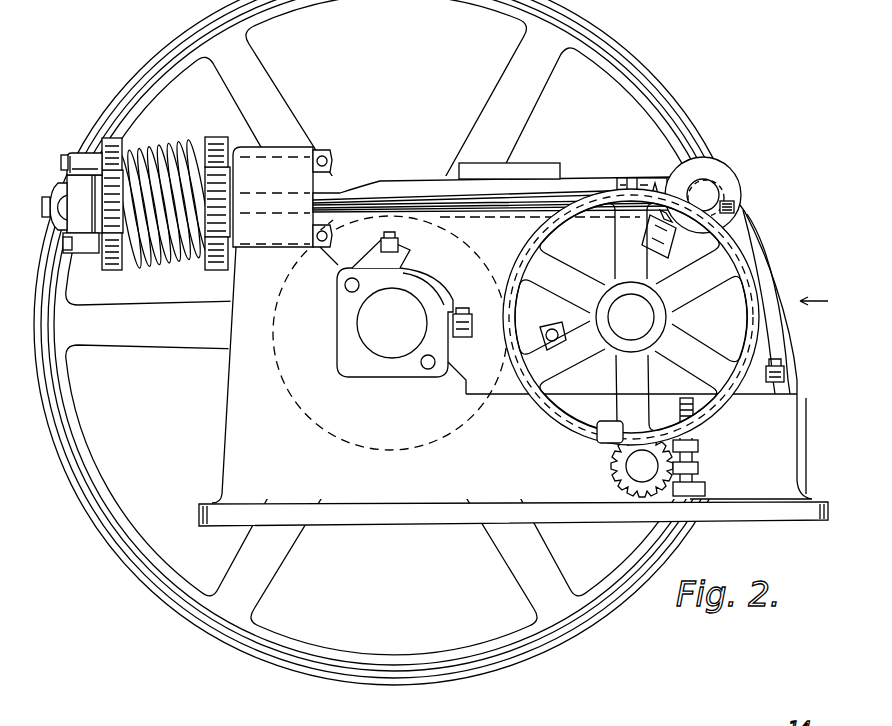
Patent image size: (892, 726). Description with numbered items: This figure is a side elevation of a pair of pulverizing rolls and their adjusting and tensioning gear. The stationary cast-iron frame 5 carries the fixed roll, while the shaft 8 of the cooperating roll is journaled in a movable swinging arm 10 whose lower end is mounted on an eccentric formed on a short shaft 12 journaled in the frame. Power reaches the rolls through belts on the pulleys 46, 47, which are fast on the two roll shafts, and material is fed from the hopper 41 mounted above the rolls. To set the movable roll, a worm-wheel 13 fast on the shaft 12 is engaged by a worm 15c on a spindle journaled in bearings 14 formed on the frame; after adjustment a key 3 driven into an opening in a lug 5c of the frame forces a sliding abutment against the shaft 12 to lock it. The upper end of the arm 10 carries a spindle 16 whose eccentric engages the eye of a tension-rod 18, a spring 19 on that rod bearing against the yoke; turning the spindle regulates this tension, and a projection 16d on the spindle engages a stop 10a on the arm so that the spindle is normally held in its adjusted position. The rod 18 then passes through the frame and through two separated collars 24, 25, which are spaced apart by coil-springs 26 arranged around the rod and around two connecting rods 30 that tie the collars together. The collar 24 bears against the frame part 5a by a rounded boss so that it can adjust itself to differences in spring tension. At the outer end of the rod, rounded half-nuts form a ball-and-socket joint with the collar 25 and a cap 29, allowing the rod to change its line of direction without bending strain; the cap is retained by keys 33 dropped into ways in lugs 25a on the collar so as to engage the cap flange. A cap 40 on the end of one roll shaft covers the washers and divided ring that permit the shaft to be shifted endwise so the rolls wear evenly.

The pulley 47 is at (447, 0).
The frame 5 is at (513, 351).
The frame part 5a is at (340, 190).
The lug 5c is at (606, 453).
The rods 30 is at (287, 156).
The coil-springs 26 is at (172, 150).
The collar 25 is at (113, 266).
The lugs 25a is at (82, 218).
The collar 24 is at (213, 265).
The keys 33 is at (78, 158).
The cap 29 is at (54, 186).
The tension-rod 18 is at (397, 197).
The hopper 41 is at (530, 170).
The spring 19 is at (641, 178).
The spindle 16 is at (708, 184).
The projection 16d is at (722, 198).
The stop 10a is at (738, 209).
The swinging arm 10 is at (752, 260).
The shaft 8 is at (631, 317).
The pulley 46 is at (553, 270).
The cap 40 is at (370, 364).
The key 3 is at (611, 424).
The short shaft 12 is at (636, 463).
The worm-wheel 13 is at (626, 476).
The worm 15c is at (700, 460).
The bearings 14 is at (705, 489).